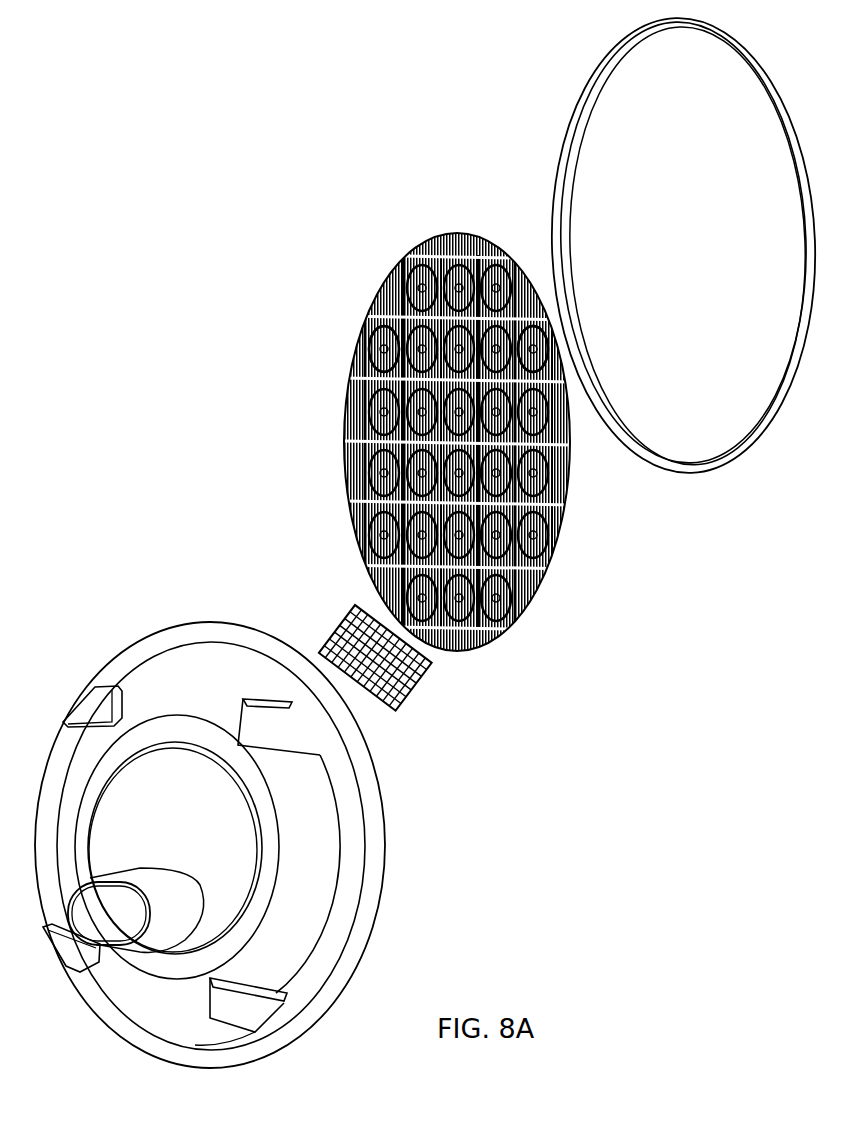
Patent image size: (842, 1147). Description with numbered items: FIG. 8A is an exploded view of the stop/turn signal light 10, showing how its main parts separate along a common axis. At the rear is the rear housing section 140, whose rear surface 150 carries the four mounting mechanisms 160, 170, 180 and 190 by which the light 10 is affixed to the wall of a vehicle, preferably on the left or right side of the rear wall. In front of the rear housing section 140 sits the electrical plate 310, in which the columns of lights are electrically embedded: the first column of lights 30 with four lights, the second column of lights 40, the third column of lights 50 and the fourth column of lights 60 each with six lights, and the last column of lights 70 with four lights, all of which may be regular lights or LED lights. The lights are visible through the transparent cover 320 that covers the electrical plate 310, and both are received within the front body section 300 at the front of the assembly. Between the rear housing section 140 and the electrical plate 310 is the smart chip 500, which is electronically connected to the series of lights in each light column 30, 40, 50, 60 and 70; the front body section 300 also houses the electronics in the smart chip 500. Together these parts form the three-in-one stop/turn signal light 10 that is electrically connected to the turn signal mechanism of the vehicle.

The light 10 is at (358, 137).
The first column of lights 30 is at (379, 308).
The second column of lights 40 is at (418, 252).
The third column of lights 50 is at (455, 252).
The fourth column of lights 60 is at (493, 252).
The last column of lights 70 is at (532, 308).
The rear housing section 140 is at (372, 800).
The rear surface 150 is at (174, 667).
The mounting mechanism 160 is at (110, 720).
The mounting mechanism 170 is at (290, 739).
The mounting mechanism 180 is at (260, 1022).
The mounting mechanism 190 is at (90, 962).
The front body section 300 is at (746, 56).
The electrical plate 310 is at (543, 584).
The transparent cover 320 is at (597, 96).
The smart chip 500 is at (411, 678).